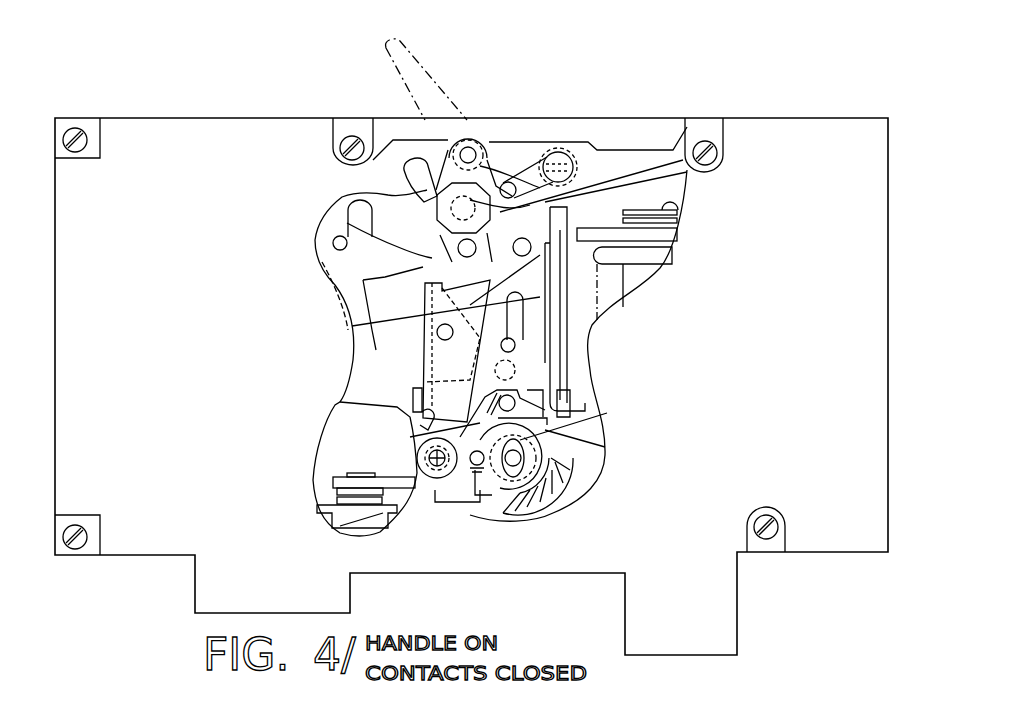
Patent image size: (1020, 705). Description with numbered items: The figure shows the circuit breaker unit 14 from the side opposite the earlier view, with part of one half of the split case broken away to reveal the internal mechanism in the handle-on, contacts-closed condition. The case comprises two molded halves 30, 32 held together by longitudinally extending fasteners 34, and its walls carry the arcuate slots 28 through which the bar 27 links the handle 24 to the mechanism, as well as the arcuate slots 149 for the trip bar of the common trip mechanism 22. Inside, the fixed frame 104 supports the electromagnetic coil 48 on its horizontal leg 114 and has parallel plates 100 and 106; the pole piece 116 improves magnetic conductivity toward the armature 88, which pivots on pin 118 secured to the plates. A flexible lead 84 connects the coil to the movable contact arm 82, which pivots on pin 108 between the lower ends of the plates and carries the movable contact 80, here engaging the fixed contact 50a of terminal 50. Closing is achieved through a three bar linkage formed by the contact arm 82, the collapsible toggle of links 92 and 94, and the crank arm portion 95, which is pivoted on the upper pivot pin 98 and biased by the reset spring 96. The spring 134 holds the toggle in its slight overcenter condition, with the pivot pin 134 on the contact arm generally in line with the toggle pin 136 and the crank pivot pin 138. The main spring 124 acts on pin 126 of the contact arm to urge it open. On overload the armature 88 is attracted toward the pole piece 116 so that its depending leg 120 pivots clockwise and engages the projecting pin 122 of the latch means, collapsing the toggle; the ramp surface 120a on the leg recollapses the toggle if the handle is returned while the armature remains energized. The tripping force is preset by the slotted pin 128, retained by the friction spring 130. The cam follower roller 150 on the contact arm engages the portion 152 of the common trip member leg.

The circuit breaker unit 14 is at (152, 97).
The common trip mechanism 22 is at (310, 265).
The handle 24 is at (388, 80).
The bar 27 is at (446, 224).
The arcuate slots 28 is at (410, 194).
The case half 30 is at (668, 130).
The case half 32 is at (803, 148).
The fasteners 34 is at (333, 150).
The electromagnetic coil 48 is at (643, 280).
The terminal 50 is at (327, 513).
The fixed contact 50a is at (327, 498).
The movable contact 80 is at (337, 484).
The movable contact arm 82 is at (382, 477).
The flexible lead 84 is at (520, 495).
The armature 88 is at (663, 175).
The toggle link 92 is at (423, 355).
The toggle link 94 is at (423, 355).
The crank arm portion 95 is at (445, 170).
The reset spring 96 is at (448, 210).
The pivot pin 98 is at (470, 147).
The frame plate 100 is at (544, 450).
The fixed frame 104 is at (572, 325).
The frame plate 106 is at (513, 153).
The pivot pin 108 is at (550, 497).
The horizontal leg 114 is at (543, 418).
The pole piece 116 is at (680, 208).
The pin 118 is at (531, 248).
The depending leg 120 is at (540, 368).
The ramp surface 120a is at (570, 398).
The projecting pin 122 is at (547, 425).
The main spring 124 is at (540, 427).
The pin 126 is at (485, 470).
The slotted pin 128 is at (562, 165).
The friction spring 130 is at (560, 207).
The spring 134 is at (423, 442).
The pin 136 is at (437, 330).
The pivot pin 138 is at (425, 258).
The arcuate slots 149 is at (348, 220).
The cam follower roller 150 is at (434, 466).
The portion of leg 152 is at (335, 405).